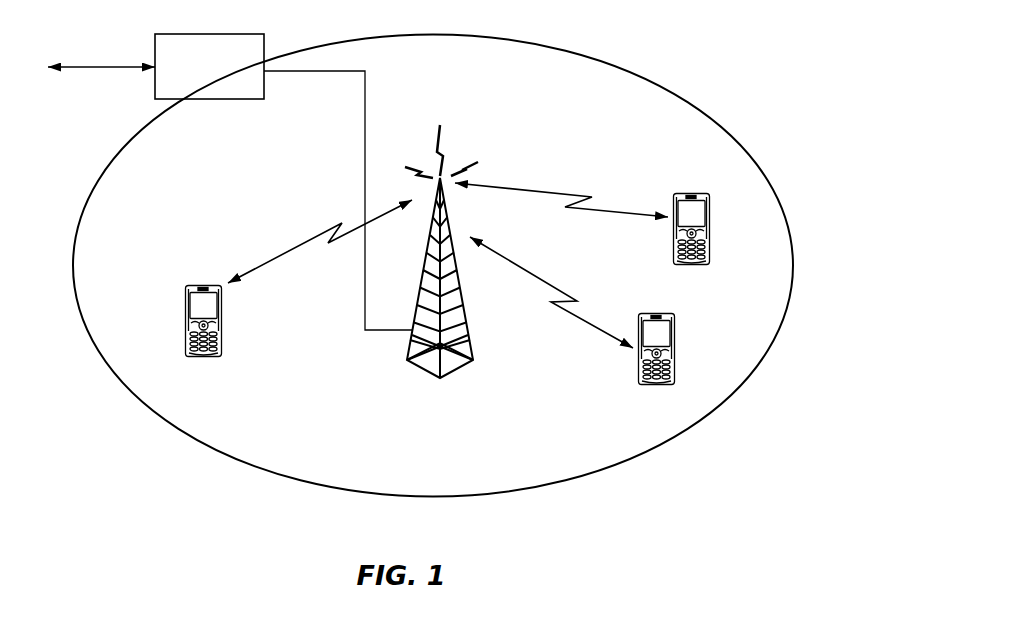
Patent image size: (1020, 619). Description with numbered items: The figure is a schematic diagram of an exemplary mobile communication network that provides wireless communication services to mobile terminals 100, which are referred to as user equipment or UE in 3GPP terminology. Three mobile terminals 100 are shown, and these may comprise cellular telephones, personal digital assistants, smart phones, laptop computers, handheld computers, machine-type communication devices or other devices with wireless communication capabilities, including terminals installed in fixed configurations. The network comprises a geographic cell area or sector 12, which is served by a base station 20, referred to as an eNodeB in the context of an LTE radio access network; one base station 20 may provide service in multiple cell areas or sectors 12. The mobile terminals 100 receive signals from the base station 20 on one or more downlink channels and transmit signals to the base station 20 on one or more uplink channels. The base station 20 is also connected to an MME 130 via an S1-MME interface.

The geographic cell area or sector 12 is at (624, 69).
The MME 130 is at (230, 182).
The base station 20 is at (470, 342).
The mobile terminal 100 is at (183, 331).